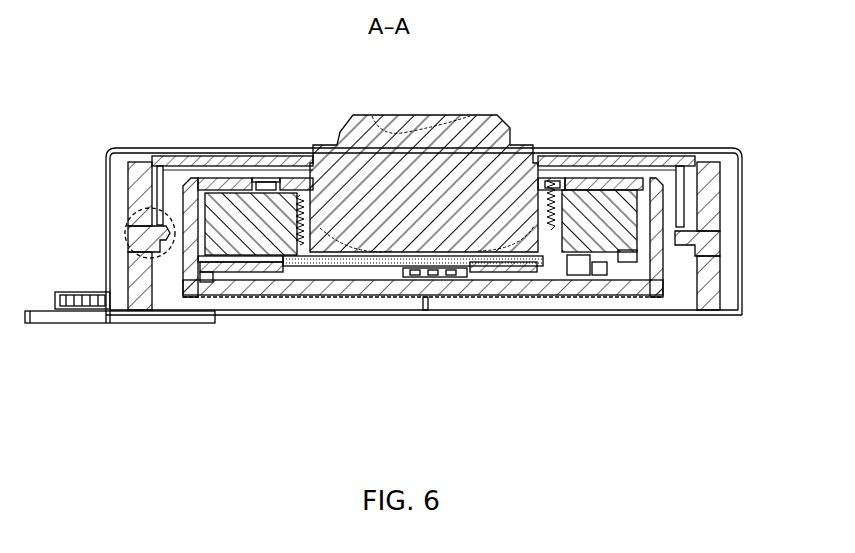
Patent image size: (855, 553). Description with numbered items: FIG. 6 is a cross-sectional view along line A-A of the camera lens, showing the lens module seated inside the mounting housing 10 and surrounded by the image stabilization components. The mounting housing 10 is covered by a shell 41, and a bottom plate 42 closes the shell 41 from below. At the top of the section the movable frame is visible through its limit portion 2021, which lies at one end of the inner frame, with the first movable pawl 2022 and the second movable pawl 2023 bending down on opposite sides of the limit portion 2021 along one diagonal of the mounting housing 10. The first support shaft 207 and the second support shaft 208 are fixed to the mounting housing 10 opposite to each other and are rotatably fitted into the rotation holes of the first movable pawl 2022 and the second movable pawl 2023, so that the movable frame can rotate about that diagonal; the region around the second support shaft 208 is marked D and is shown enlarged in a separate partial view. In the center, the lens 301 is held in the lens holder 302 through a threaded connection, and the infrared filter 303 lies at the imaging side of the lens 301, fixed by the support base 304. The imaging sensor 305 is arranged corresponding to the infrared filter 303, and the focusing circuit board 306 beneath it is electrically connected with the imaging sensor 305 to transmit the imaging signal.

The mounting housing 10 is at (708, 208).
The shell 41 is at (740, 262).
The bottom plate 42 is at (730, 313).
The first support shaft 207 is at (707, 237).
The second support shaft 208 is at (157, 248).
The partial enlarged region D is at (127, 226).
The lens 301 is at (338, 170).
The lens holder 302 is at (562, 192).
The infrared filter 303 is at (492, 262).
The support base 304 is at (593, 253).
The imaging sensor 305 is at (420, 272).
The focusing circuit board 306 is at (343, 290).
The limit portion 2021 is at (615, 158).
The first movable pawl 2022 is at (688, 198).
The second movable pawl 2023 is at (170, 168).